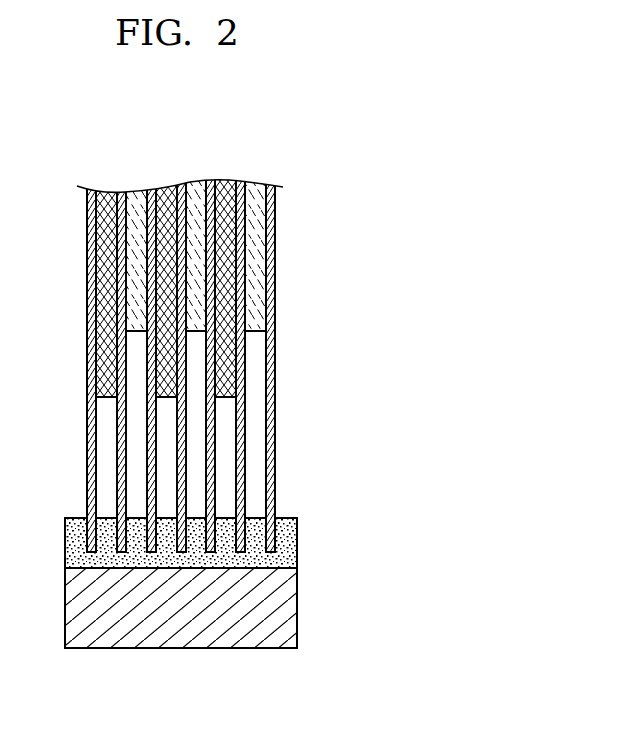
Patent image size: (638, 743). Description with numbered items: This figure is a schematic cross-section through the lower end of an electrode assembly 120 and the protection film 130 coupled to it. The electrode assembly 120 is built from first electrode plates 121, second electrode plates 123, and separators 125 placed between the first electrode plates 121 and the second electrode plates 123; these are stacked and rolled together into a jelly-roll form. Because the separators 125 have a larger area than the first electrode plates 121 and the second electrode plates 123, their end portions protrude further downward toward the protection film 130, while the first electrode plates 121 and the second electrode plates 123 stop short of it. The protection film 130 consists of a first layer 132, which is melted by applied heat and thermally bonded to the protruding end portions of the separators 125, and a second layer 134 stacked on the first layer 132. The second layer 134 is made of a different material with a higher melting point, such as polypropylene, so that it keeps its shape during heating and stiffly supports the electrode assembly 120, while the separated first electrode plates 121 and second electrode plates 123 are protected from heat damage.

The electrode assembly 120 is at (238, 363).
The first electrode plates 121 is at (263, 302).
The second electrode plates 123 is at (236, 369).
The separators 125 is at (342, 290).
The protection film 130 is at (249, 583).
The first layer 132 is at (283, 545).
The second layer 134 is at (284, 612).